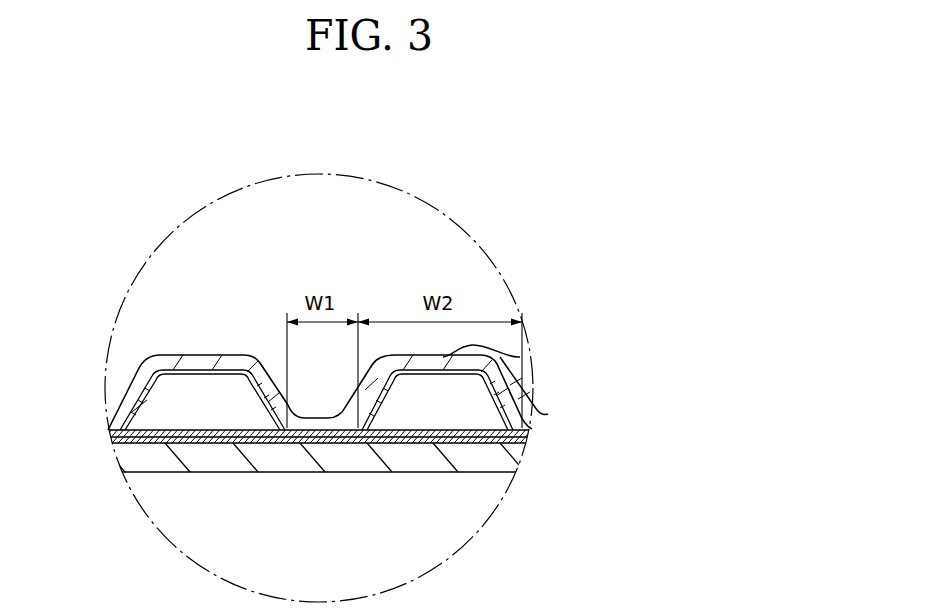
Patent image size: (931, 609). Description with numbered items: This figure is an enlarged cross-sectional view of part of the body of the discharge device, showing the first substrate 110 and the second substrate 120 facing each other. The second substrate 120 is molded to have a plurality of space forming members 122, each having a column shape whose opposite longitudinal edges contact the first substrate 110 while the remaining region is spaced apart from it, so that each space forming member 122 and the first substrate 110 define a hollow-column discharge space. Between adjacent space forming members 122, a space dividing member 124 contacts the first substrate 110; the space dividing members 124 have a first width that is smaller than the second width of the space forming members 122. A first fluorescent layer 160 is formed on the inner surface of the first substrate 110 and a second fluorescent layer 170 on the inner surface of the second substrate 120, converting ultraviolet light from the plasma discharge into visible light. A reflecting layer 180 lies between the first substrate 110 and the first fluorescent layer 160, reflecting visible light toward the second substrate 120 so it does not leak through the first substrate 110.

The first substrate 110 is at (127, 458).
The second substrate 120 is at (130, 400).
The space forming member 122 is at (520, 357).
The space dividing member 124 is at (320, 418).
The first fluorescent layer 160 is at (527, 434).
The second fluorescent layer 170 is at (128, 420).
The reflecting layer 180 is at (527, 441).